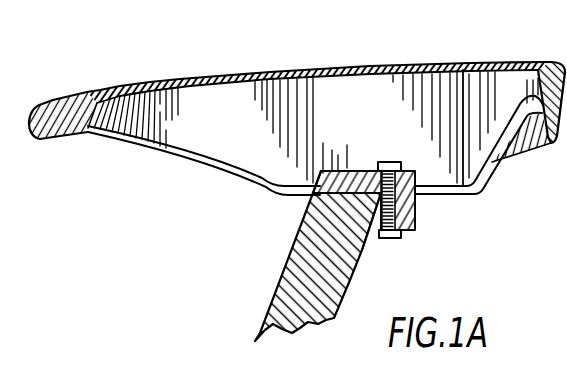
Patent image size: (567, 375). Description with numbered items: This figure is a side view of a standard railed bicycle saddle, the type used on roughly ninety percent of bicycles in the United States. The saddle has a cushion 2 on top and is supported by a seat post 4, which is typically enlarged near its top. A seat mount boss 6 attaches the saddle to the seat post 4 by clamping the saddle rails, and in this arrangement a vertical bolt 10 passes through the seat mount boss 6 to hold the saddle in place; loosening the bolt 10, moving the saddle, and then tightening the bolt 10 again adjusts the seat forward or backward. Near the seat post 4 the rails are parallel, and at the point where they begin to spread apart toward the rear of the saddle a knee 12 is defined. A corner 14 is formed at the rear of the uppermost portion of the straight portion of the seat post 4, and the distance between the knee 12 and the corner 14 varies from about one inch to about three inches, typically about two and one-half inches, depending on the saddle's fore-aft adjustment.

The cushion 2 is at (459, 63).
The seat post 4 is at (281, 267).
The seat mount boss 6 is at (347, 170).
The vertical bolt 10 is at (414, 207).
The knee 12 is at (480, 205).
The corner 14 is at (369, 258).